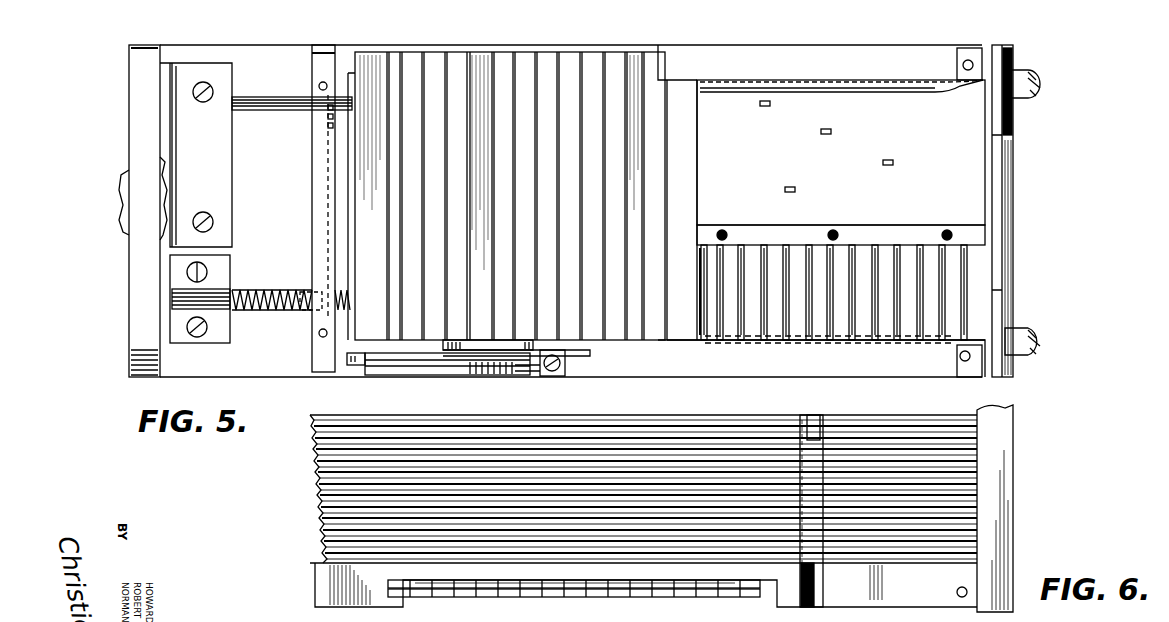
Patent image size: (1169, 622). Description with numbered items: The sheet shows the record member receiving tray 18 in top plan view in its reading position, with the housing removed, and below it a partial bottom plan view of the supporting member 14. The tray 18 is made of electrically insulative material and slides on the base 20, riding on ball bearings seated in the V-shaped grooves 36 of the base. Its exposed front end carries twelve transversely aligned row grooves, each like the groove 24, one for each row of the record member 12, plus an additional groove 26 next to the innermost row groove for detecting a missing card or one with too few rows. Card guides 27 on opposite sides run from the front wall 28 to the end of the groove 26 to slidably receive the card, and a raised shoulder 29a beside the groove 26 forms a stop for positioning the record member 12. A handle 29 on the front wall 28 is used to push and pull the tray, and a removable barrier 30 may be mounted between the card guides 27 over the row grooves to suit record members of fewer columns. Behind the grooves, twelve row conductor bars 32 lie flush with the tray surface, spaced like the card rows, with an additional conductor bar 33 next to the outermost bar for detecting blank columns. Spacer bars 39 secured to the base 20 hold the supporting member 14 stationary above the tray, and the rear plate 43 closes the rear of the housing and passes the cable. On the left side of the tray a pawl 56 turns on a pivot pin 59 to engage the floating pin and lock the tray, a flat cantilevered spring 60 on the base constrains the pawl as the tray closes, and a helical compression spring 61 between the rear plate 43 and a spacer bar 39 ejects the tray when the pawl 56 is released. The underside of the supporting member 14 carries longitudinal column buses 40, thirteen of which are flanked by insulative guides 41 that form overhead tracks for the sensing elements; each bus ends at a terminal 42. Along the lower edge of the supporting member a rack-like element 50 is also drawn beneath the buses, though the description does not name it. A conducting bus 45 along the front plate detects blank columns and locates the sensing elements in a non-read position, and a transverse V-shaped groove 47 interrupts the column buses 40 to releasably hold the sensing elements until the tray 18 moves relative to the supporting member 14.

In FIG. 5, the record member 12 is at (972, 155).
In FIG. 6, the supporting member 14 is at (330, 588).
In FIG. 5, the record member receiving tray 18 is at (677, 105).
In FIG. 5, the base 20 is at (182, 50).
In FIG. 5, the groove 24 is at (722, 318).
In FIG. 5, the additional groove 26 is at (700, 318).
In FIG. 5, the card guides 27 is at (967, 86).
In FIG. 5, the front wall 28 is at (1008, 300).
In FIG. 5, the handle 29 is at (1040, 345).
In FIG. 5, the raised shoulder 29a is at (695, 258).
In FIG. 5, the barrier 30 is at (962, 225).
In FIG. 5, the row conductor bars 32 is at (598, 340).
In FIG. 5, the additional conductor bar 33 is at (652, 332).
In FIG. 5, the V-shaped grooves 36 is at (286, 110).
In FIG. 5, the spacer bars 39 is at (326, 59).
In FIG. 6, the column buses 40 is at (312, 437).
In FIG. 6, the insulative guides 41 is at (320, 545).
In FIG. 6, the electrical terminal 42 is at (575, 602).
In FIG. 5, the rear plate 43 is at (138, 326).
In FIG. 6, the conducting bus 45 is at (985, 563).
In FIG. 6, the V-shaped groove 47 is at (825, 580).
In FIG. 6, the rack 50 is at (745, 592).
In FIG. 5, the pawl 56 is at (372, 368).
In FIG. 5, the pivot pin 59 is at (520, 374).
In FIG. 5, the flat cantilevered spring 60 is at (404, 366).
In FIG. 5, the helical compression spring 61 is at (288, 285).